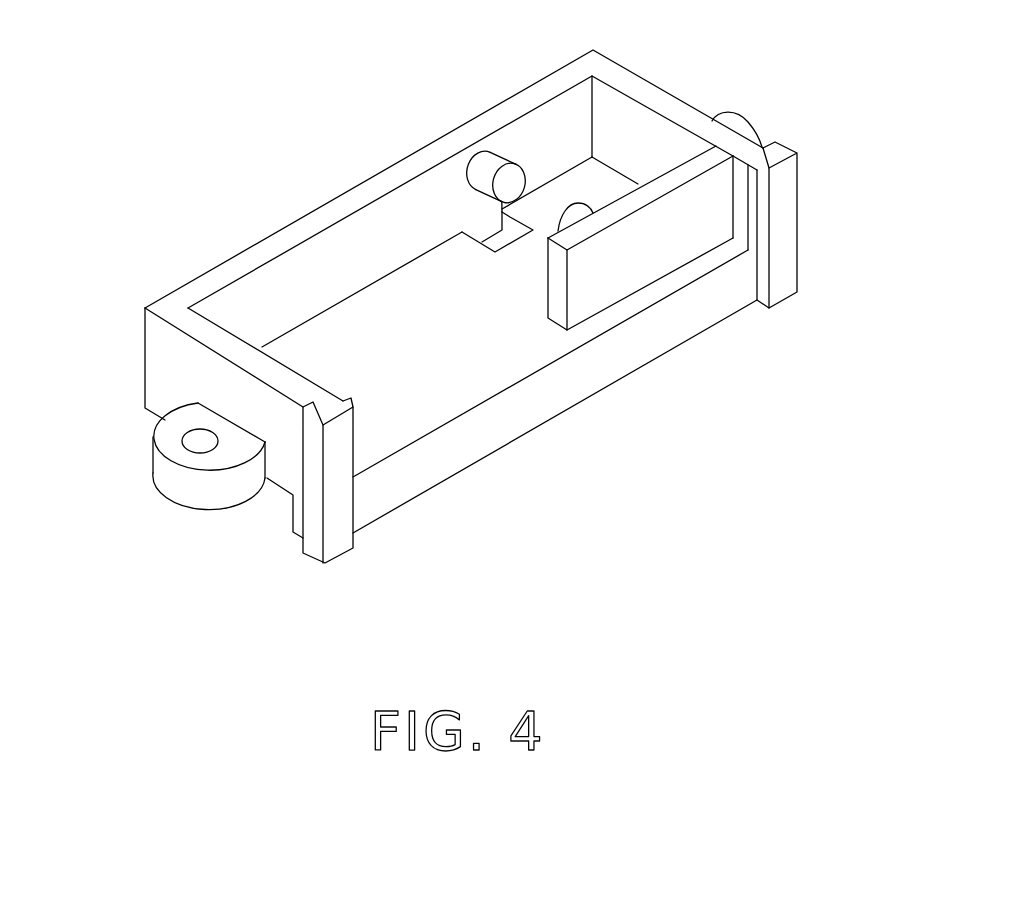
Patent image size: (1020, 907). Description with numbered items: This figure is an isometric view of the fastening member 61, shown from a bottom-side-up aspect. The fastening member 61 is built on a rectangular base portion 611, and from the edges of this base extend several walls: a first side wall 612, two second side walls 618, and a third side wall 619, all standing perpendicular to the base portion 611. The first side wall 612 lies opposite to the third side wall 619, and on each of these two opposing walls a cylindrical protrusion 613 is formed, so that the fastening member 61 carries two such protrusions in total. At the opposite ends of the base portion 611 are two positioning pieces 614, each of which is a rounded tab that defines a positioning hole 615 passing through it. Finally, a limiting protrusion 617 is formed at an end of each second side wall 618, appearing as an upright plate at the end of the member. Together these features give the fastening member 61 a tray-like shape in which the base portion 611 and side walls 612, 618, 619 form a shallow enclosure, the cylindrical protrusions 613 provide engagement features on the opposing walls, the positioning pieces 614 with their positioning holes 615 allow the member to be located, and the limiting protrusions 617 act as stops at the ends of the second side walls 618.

The fastening member 61 is at (468, 304).
The base portion 611 is at (582, 376).
The first side wall 612 is at (565, 118).
The cylindrical protrusion 613 is at (487, 165).
The positioning piece 614 is at (150, 483).
The positioning hole 615 is at (193, 442).
The limiting protrusion 617 is at (780, 225).
The second side wall 618 is at (657, 100).
The third side wall 619 is at (635, 258).